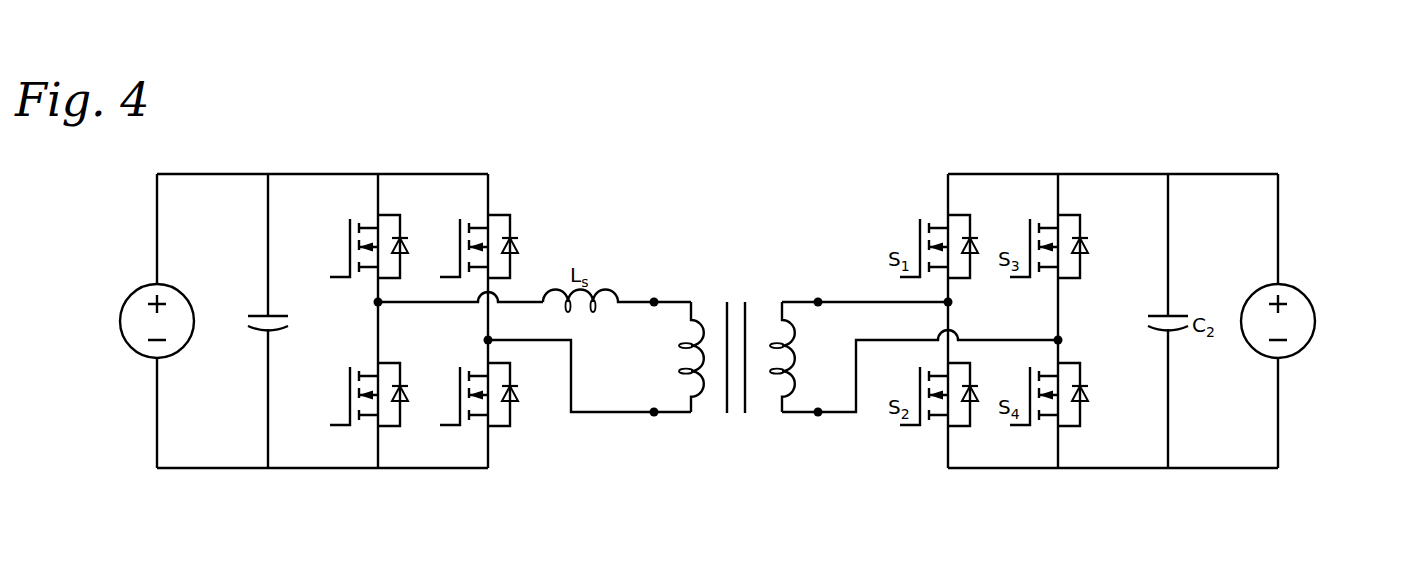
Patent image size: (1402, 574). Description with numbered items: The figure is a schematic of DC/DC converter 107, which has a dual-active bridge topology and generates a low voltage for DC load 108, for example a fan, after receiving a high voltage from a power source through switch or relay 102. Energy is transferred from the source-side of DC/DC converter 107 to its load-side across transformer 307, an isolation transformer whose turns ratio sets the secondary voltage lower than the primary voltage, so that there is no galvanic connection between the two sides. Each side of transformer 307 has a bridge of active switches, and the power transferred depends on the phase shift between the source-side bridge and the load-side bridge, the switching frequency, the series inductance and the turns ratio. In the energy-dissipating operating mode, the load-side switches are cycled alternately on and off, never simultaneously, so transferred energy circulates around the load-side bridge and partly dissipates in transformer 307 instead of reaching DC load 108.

The switch or relay 102 is at (135, 292).
The DC/DC converter 107 is at (411, 118).
The DC load 108 is at (1302, 288).
The transformer 307 is at (727, 402).